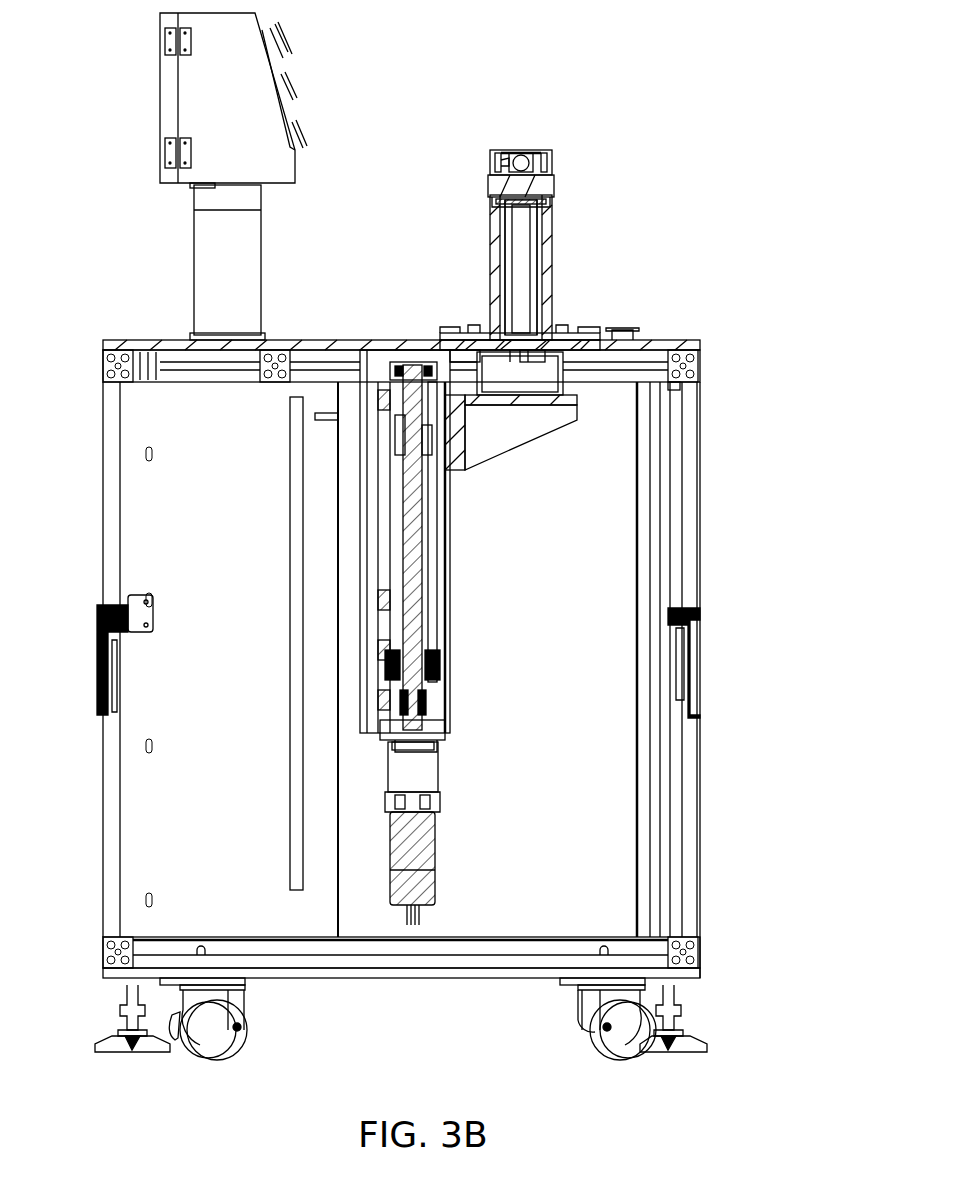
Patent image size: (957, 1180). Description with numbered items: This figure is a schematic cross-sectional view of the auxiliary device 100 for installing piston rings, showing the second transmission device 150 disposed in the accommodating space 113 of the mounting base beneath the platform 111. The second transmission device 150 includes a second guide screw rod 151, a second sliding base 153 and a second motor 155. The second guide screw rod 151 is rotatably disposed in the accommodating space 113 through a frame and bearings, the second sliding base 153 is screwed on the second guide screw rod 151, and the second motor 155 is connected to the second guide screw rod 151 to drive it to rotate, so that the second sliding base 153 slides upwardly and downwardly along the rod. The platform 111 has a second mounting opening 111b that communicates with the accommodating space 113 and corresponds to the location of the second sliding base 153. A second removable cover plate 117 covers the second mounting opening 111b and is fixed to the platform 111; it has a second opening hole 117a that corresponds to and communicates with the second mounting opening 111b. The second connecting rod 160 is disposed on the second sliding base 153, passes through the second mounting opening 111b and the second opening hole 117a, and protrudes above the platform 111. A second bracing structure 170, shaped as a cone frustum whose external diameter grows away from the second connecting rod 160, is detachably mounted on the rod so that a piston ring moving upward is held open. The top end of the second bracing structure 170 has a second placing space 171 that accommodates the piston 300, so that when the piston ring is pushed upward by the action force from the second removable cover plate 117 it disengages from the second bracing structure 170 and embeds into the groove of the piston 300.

The auxiliary device for installing piston rings 100 is at (118, 276).
The platform 111 is at (658, 340).
The second mounting opening 111b is at (565, 372).
The accommodating space 113 is at (618, 530).
The second removable cover plate 117 is at (572, 345).
The second opening hole 117a is at (556, 333).
The second transmission device 150 is at (457, 712).
The second guide screw rod 151 is at (417, 612).
The second sliding base 153 is at (508, 458).
The second motor 155 is at (426, 845).
The second connecting rod 160 is at (490, 232).
The second bracing structure 170 is at (553, 200).
The second placing space 171 is at (498, 150).
The piston 300 is at (544, 150).